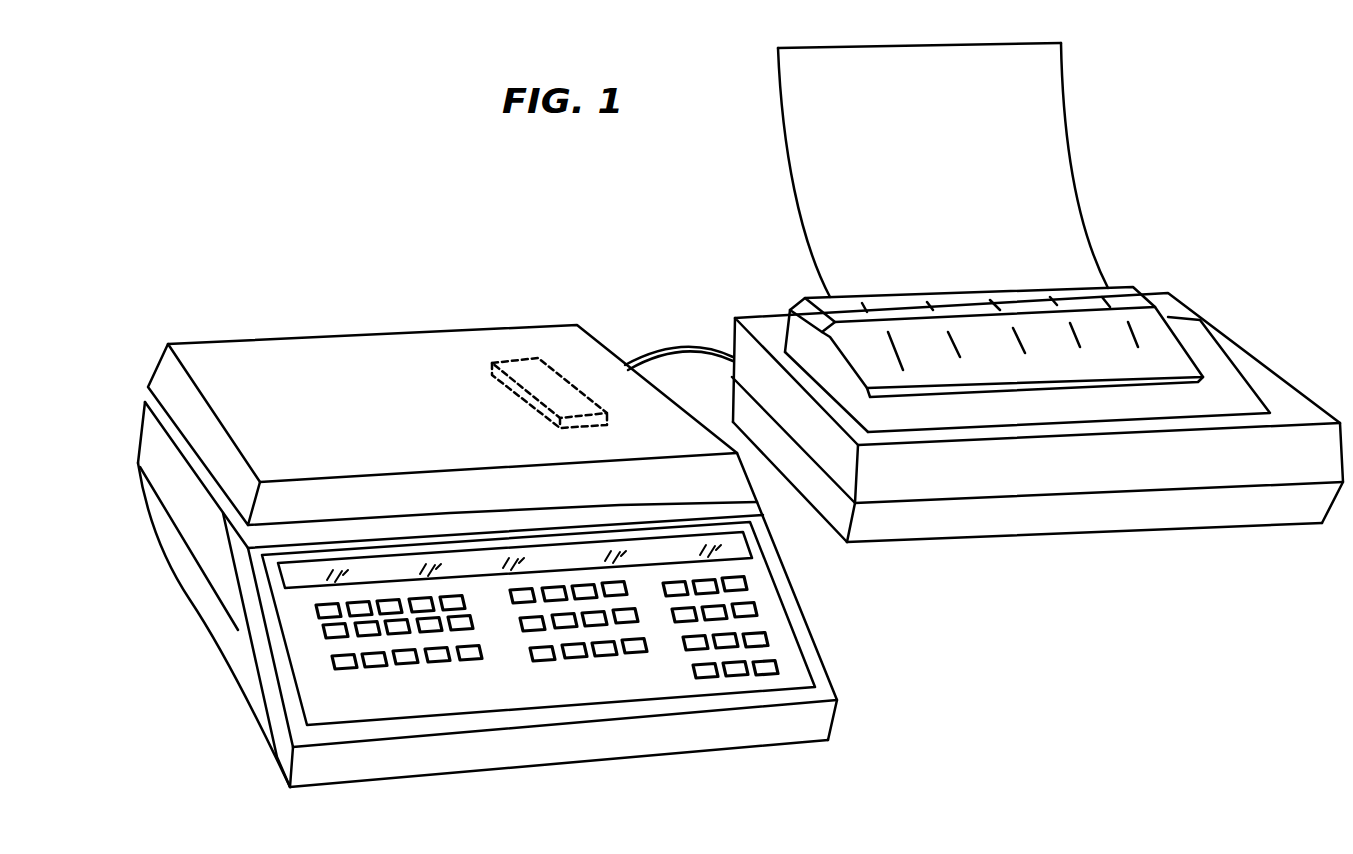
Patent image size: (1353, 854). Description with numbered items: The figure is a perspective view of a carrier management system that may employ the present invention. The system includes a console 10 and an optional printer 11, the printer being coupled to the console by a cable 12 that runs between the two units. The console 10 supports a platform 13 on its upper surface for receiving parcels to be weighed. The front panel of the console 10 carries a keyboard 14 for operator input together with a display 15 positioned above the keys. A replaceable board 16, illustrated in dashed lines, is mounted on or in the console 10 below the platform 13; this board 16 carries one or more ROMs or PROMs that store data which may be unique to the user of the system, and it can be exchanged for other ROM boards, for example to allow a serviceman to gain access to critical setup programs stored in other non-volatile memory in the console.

The console 10 is at (187, 523).
The printer 11 is at (1003, 510).
The cable 12 is at (685, 347).
The platform 13 is at (307, 345).
The keyboard 14 is at (315, 662).
The display 15 is at (292, 578).
The replaceable board 16 is at (535, 360).